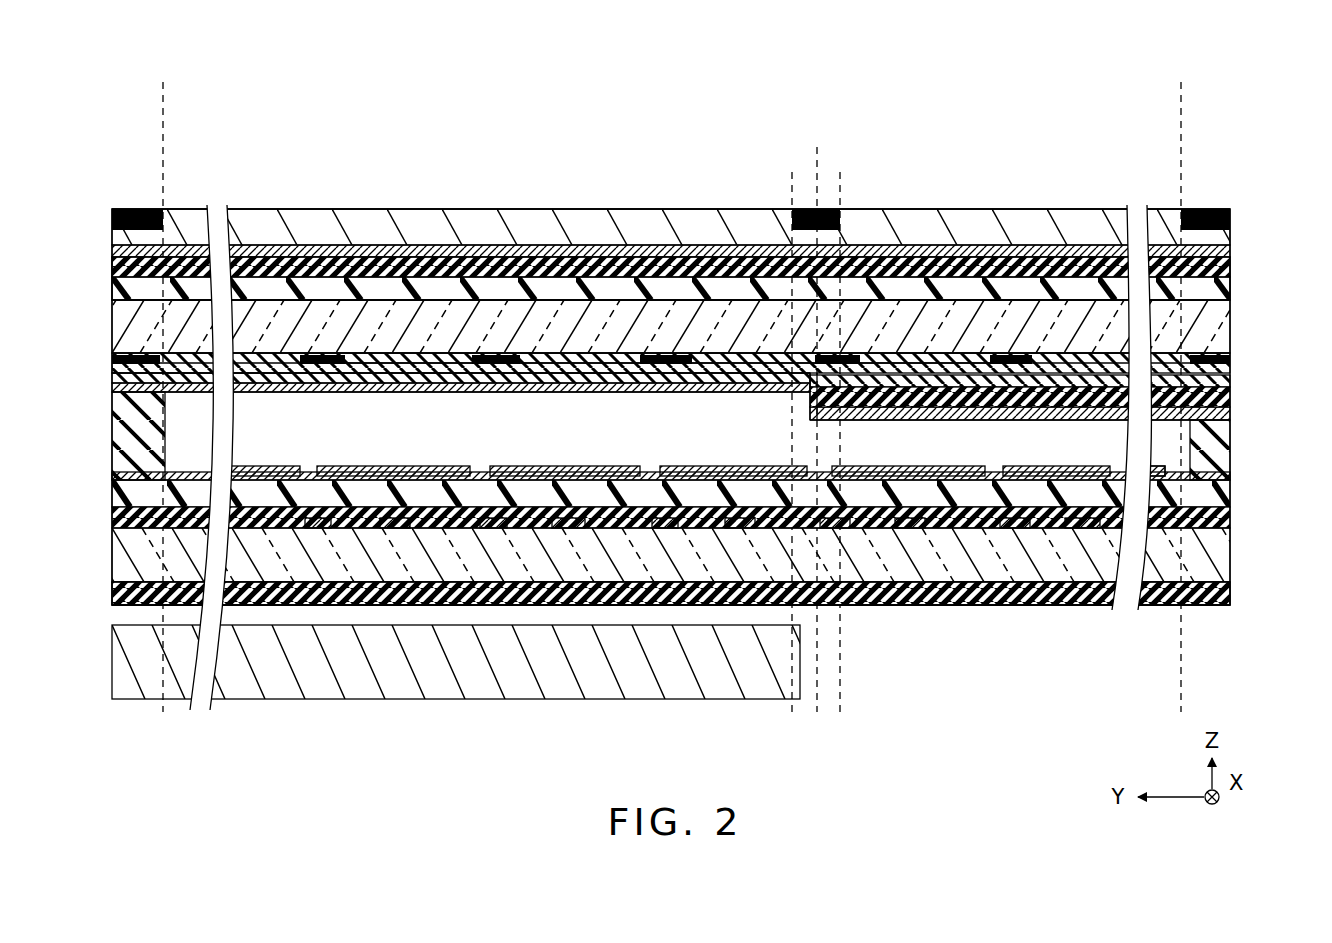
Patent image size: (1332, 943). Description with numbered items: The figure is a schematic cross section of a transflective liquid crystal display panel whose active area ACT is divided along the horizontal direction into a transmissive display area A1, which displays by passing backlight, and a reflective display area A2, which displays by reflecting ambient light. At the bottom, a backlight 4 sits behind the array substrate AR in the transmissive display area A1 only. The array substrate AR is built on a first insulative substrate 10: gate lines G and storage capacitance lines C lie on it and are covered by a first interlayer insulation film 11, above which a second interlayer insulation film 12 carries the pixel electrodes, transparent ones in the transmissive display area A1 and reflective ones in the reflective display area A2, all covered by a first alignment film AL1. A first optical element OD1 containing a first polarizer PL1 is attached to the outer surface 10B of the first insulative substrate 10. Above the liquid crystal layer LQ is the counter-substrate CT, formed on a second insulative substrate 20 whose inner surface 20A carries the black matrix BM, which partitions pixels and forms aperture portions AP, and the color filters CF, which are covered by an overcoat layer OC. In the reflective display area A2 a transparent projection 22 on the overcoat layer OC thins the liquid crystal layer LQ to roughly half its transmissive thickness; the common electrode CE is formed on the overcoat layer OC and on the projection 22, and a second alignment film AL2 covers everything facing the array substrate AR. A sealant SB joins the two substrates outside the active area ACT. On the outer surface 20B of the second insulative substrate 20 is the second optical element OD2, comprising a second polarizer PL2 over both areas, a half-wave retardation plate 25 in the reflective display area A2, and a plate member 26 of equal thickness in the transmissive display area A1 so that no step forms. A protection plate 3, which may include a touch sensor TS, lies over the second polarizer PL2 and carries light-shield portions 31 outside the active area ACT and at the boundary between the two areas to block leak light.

The active area ACT is at (163, 82).
The transmissive display area A1 is at (163, 147).
The reflective display area A2 is at (817, 147).
The light-shield portion 31 is at (140, 208).
The inner surface 20A is at (258, 356).
The black matrix BM is at (345, 356).
The color filter CF is at (428, 356).
The aperture portion AP is at (555, 350).
The outer surface 20B is at (663, 352).
The plate member 26 is at (748, 300).
The touch sensor TS is at (112, 250).
The second optical element OD2 is at (106, 257).
The second insulative substrate 20 is at (112, 326).
The sealant SB is at (118, 428).
The second interlayer insulation film 12 is at (112, 492).
The first interlayer insulation film 11 is at (112, 518).
The first optical element OD1 is at (112, 594).
The protection plate 3 is at (1232, 236).
The second polarizer PL2 is at (1232, 268).
The retardation plate 25 is at (1232, 292).
The counter-substrate CT is at (1236, 331).
The projection 22 is at (1188, 398).
The liquid crystal layer LQ is at (1175, 440).
The array substrate AR is at (1236, 546).
The first polarizer PL1 is at (1232, 594).
The first alignment film AL1 is at (270, 471).
The second alignment film AL2 is at (697, 393).
The overcoat layer OC is at (754, 384).
The common electrode CE is at (1172, 420).
The gate line G is at (318, 529).
The storage capacitance line C is at (395, 529).
The backlight 4 is at (650, 680).
The first insulative substrate 10 is at (912, 566).
The outer surface 10B is at (1032, 584).